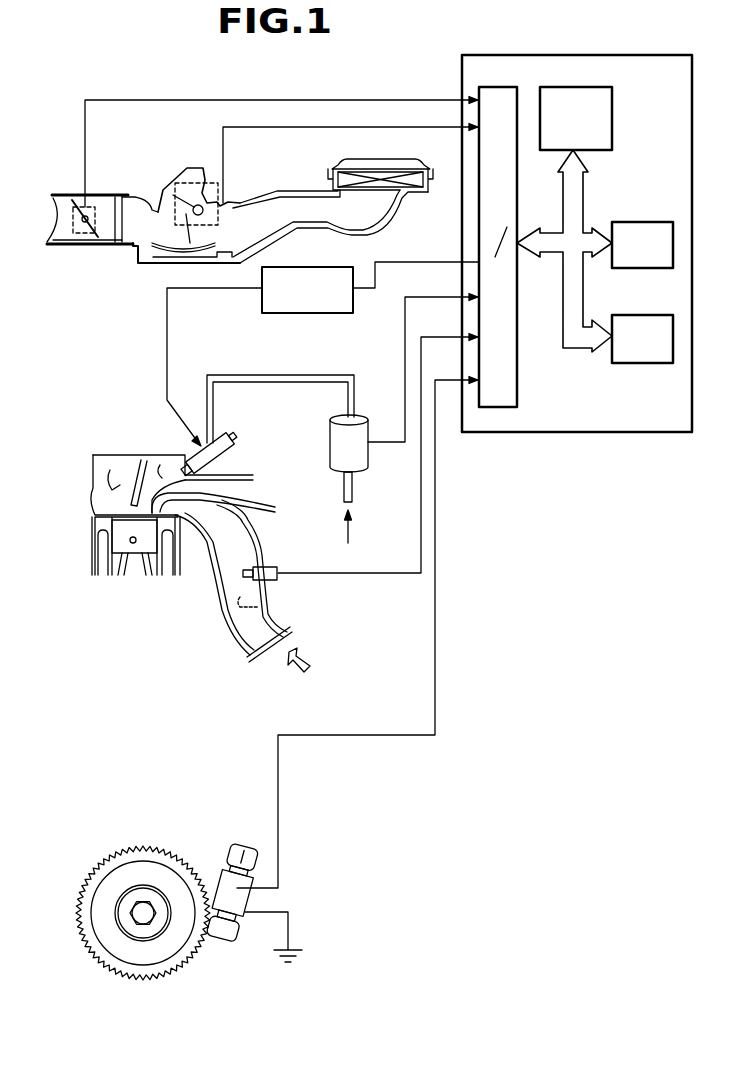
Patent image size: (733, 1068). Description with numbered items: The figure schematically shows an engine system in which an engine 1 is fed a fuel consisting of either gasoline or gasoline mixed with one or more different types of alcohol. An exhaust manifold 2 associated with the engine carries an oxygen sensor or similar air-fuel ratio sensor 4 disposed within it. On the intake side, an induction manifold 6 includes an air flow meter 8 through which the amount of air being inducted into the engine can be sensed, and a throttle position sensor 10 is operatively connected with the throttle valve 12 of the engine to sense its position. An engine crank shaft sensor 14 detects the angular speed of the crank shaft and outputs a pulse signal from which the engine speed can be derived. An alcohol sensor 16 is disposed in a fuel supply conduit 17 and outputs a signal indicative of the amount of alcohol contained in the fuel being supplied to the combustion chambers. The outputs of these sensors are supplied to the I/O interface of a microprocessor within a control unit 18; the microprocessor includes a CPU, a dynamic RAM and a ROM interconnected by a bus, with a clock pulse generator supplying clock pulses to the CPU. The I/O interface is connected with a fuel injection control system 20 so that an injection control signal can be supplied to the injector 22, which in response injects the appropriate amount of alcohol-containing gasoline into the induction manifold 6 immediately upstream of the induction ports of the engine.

The engine 1 is at (76, 559).
The exhaust manifold 2 is at (222, 617).
The air-fuel ratio sensor 4 is at (265, 567).
The induction manifold 6 is at (255, 197).
The air flow meter 8 is at (165, 178).
The throttle position sensor 10 is at (75, 238).
The throttle valve 12 is at (52, 210).
The engine crank shaft sensor 14 is at (210, 848).
The alcohol sensor 16 is at (330, 457).
The fuel supply conduit 17 is at (343, 397).
The control unit 18 is at (462, 78).
The fuel injection control system 20 is at (302, 318).
The injector 22 is at (222, 437).